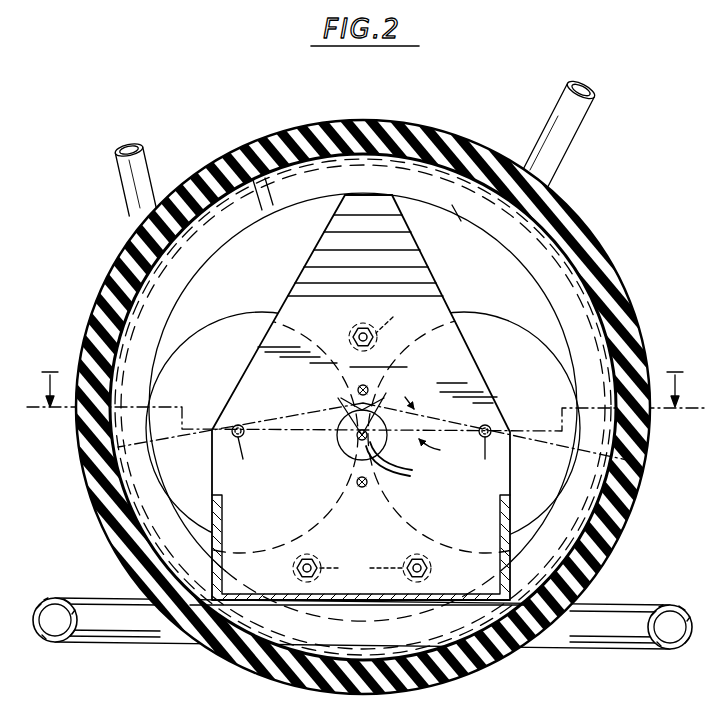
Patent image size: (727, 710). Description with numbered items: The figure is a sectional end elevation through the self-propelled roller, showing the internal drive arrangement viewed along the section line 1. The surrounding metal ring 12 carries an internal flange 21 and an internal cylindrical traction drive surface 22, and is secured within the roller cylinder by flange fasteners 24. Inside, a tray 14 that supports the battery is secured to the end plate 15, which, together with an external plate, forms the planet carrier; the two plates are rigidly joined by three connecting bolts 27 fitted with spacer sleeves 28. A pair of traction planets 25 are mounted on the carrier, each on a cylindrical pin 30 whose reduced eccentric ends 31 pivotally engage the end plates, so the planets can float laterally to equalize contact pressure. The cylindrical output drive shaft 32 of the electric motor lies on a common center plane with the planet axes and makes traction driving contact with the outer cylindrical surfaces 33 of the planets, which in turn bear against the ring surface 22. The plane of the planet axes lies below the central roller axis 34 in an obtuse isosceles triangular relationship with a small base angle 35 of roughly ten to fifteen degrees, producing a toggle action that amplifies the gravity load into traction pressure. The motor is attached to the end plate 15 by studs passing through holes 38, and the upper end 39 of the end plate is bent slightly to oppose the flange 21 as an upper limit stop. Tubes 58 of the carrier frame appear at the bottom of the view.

The section line 1- 1 is at (366, 389).
The annular housing ring 12 is at (586, 226).
The tray 14 is at (222, 568).
The end plate 15 is at (487, 368).
The internal flange 21 is at (449, 227).
The cylindrical traction drive surface 22 is at (494, 244).
The flange fasteners 24 is at (494, 156).
The traction planets 25 is at (238, 311).
The connecting bolts 27 is at (357, 331).
The spacer sleeves 28 is at (368, 439).
The cylindrical pin 30 is at (244, 424).
The reduced eccentric ends 31 is at (364, 460).
The output drive shaft 32 is at (355, 435).
The outer cylindrical surfaces 33 is at (403, 464).
The central roller axis 34 is at (402, 391).
The base angle 35 is at (441, 451).
The holes 38 is at (356, 390).
The upper end 39 is at (367, 193).
The tubes 58 is at (118, 637).